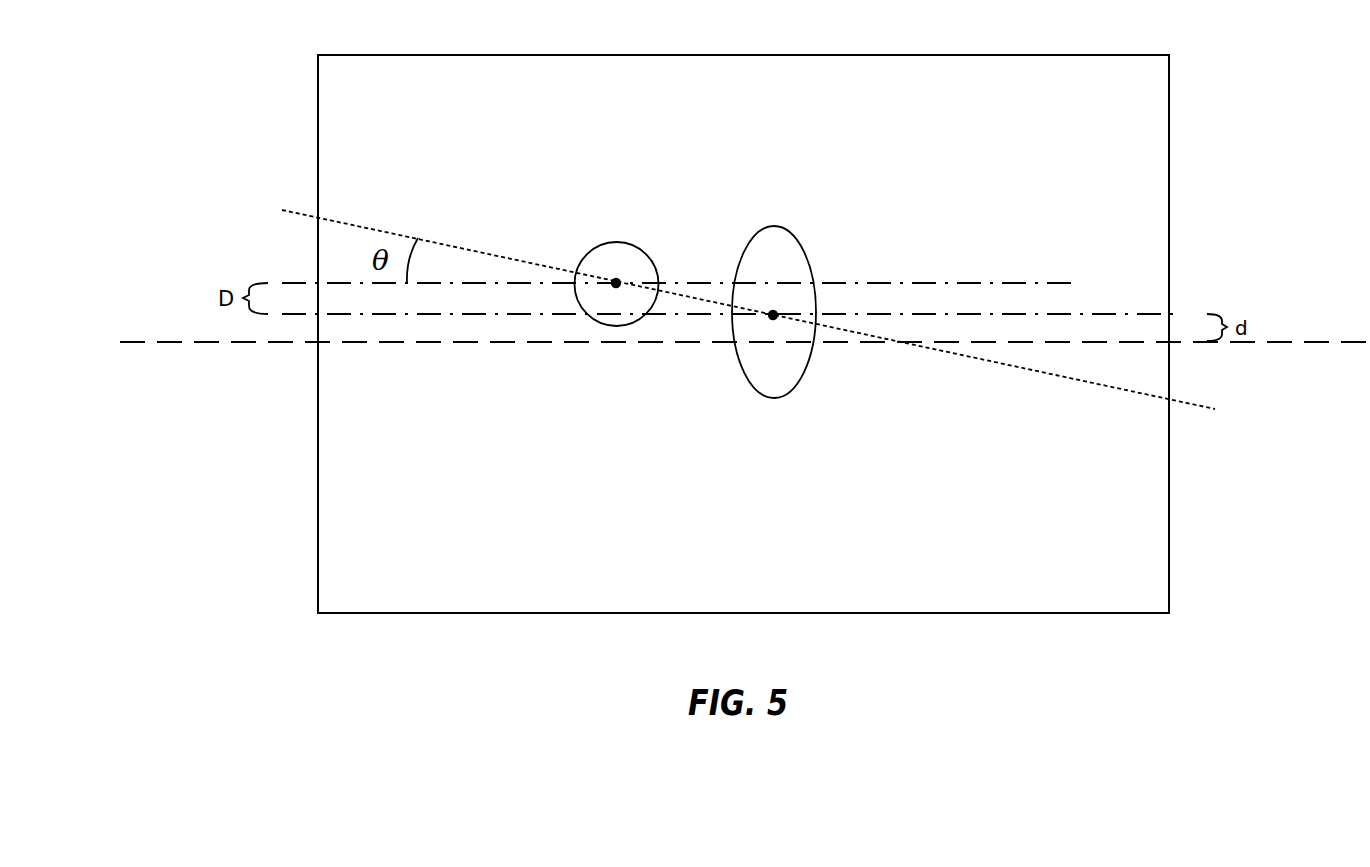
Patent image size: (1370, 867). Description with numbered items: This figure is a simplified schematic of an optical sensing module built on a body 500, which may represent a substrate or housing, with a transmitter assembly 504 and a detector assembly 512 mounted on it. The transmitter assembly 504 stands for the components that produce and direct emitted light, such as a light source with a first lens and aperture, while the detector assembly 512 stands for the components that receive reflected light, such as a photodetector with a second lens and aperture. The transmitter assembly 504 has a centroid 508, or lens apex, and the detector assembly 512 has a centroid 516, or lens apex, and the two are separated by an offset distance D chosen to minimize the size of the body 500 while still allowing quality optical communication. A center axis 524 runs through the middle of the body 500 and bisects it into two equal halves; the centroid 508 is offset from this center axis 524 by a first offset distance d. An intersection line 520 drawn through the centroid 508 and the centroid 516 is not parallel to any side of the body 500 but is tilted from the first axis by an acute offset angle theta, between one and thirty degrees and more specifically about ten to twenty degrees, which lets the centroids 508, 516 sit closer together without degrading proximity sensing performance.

The body 500 is at (318, 123).
The transmitter assembly 504 is at (780, 400).
The centroid 508 is at (773, 315).
The detector assembly 512 is at (617, 242).
The centroid 516 is at (616, 283).
The intersection line 520 is at (380, 231).
The center axis 524 is at (1305, 342).